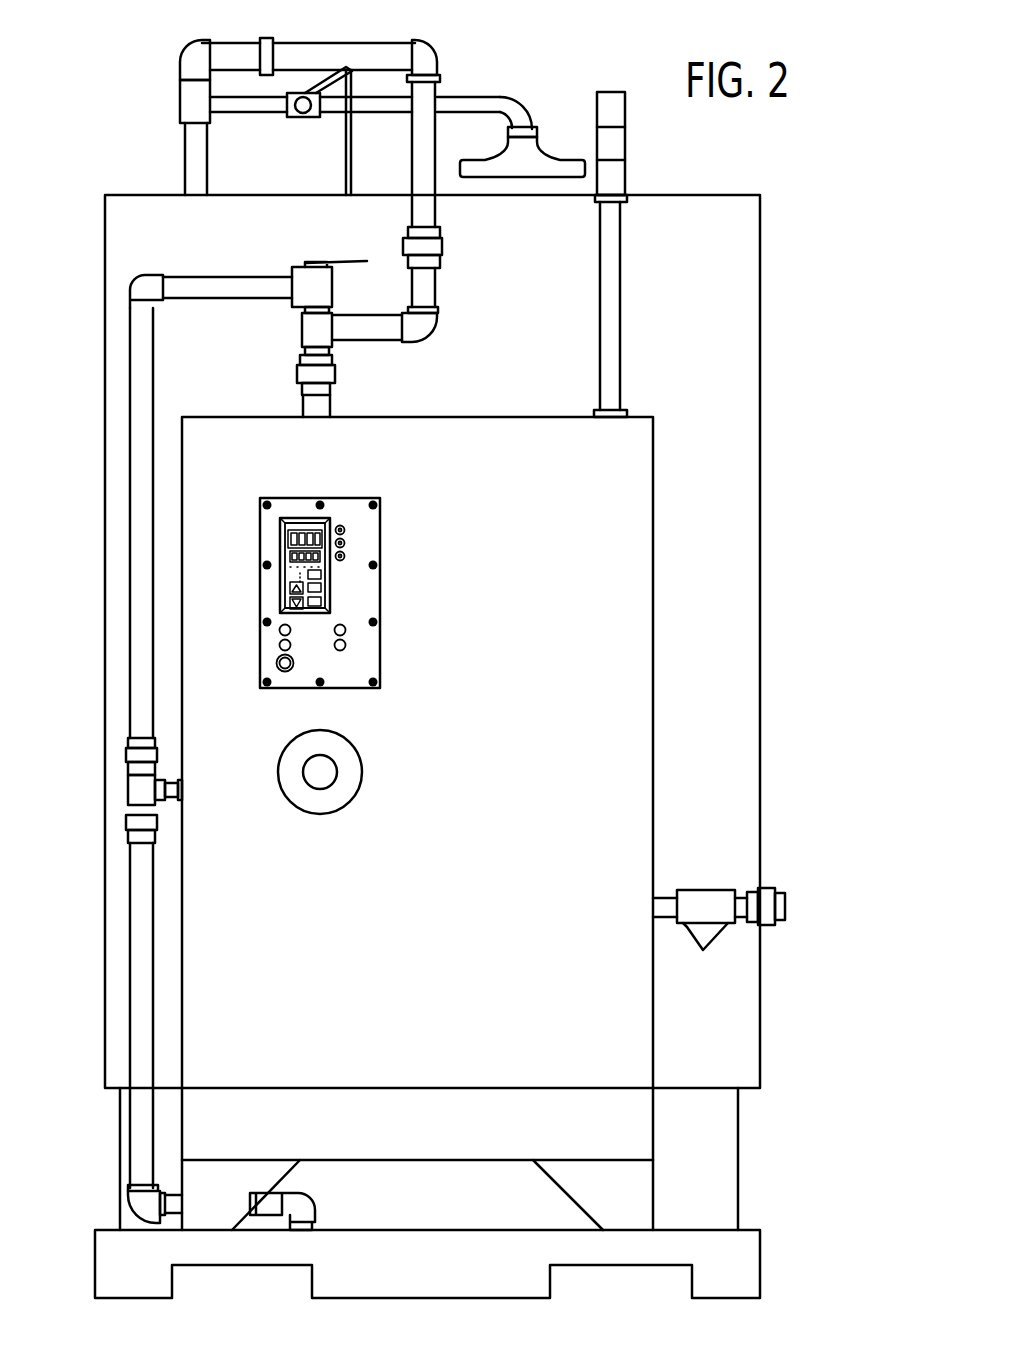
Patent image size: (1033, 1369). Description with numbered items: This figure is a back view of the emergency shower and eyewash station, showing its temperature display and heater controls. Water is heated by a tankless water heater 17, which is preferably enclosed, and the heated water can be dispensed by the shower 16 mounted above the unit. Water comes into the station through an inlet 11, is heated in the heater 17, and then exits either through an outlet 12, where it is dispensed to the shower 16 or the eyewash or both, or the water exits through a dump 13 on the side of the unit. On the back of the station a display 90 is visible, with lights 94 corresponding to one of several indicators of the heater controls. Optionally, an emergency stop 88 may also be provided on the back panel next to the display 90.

The inlet 11 is at (785, 905).
The outlet 12 is at (428, 283).
The dump 13 is at (170, 795).
The shower 16 is at (543, 163).
The tankless water heater 17 is at (597, 492).
The emergency stop 88 is at (328, 772).
The display 90 is at (290, 570).
The lights 94 is at (365, 535).